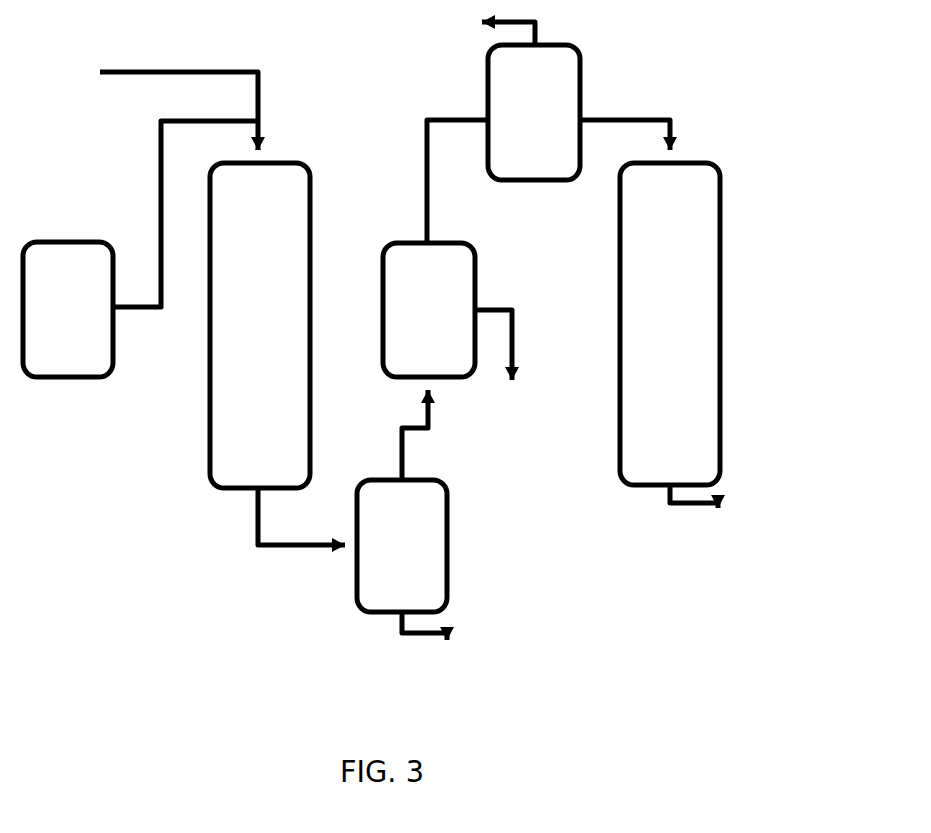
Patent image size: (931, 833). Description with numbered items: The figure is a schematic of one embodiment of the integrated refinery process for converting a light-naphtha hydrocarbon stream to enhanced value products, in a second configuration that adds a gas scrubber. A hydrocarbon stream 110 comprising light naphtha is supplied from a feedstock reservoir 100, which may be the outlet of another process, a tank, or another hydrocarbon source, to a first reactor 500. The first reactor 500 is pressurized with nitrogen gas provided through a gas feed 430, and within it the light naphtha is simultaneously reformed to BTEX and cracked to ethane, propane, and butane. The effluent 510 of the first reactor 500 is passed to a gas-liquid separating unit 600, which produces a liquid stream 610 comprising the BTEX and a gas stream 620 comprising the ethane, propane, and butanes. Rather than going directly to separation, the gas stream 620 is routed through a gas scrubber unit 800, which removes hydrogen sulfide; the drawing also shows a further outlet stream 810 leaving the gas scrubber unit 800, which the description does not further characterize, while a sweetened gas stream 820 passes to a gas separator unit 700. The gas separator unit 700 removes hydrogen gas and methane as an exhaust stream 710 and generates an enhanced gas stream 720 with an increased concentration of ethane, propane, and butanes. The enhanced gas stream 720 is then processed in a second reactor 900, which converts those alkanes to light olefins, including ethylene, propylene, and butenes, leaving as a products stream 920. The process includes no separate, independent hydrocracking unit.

The feedstock reservoir 100 is at (68, 309).
The hydrocarbon stream 110 is at (184, 214).
The gas feed 430 is at (150, 105).
The first reactor 500 is at (260, 325).
The effluent 510 is at (301, 537).
The gas-liquid separating unit 600 is at (402, 546).
The liquid stream 610 is at (434, 652).
The gas stream 620 is at (434, 435).
The gas separator unit 700 is at (534, 112).
The exhaust stream 710 is at (625, 110).
The enhanced gas stream 720 is at (474, 26).
The gas scrubber unit 800 is at (429, 310).
The bottoms stream 810 is at (502, 369).
The sweetened gas stream 820 is at (457, 181).
The second reactor 900 is at (670, 324).
The products stream 920 is at (709, 521).